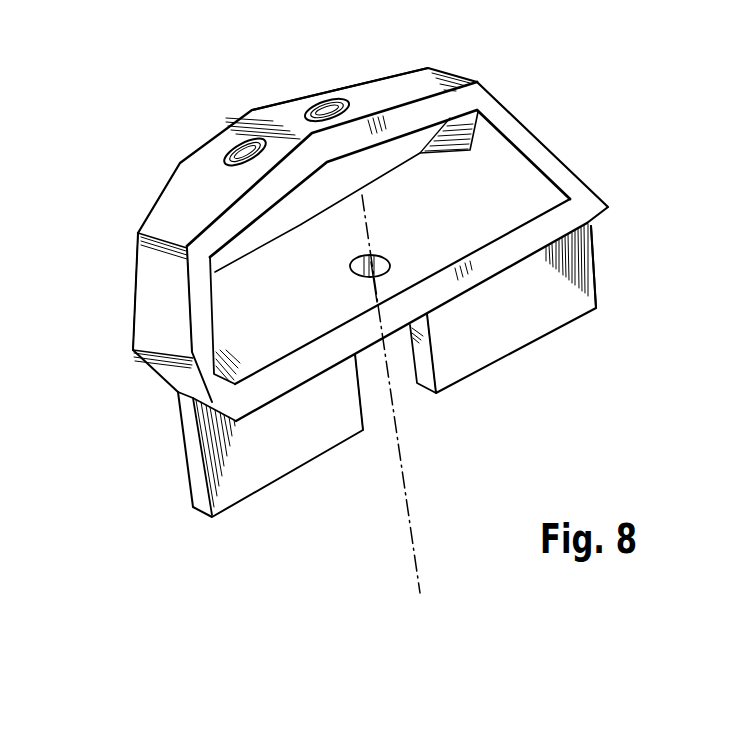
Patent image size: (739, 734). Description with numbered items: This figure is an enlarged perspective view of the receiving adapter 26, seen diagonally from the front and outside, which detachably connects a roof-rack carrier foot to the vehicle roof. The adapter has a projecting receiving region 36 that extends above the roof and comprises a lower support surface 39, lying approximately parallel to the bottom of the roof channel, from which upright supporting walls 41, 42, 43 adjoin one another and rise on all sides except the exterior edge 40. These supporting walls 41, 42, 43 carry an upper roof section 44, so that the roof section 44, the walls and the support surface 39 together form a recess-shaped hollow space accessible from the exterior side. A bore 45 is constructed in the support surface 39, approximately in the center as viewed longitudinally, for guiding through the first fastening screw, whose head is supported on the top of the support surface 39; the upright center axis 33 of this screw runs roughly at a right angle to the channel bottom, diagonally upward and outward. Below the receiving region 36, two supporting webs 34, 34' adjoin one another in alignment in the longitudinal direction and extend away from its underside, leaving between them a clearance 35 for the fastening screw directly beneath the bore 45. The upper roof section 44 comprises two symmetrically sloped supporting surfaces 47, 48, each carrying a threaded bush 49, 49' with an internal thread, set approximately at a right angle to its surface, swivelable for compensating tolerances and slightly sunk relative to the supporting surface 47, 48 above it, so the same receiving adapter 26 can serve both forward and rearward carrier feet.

The receiving adapter 26 is at (573, 152).
The upright center axis 33 is at (408, 505).
The supporting web 34 is at (270, 451).
The supporting web 34' is at (503, 326).
The clearance 35 is at (386, 370).
The projecting receiving region 36 is at (133, 295).
The lower support surface 39 is at (472, 230).
The exterior edge 40 is at (558, 226).
The supporting wall 41 is at (293, 203).
The supporting wall 42 is at (148, 277).
The supporting wall 43 is at (510, 123).
The upper roof section 44 is at (369, 76).
The bore 45 is at (352, 272).
The supporting surface 47 is at (170, 190).
The supporting surface 48 is at (413, 70).
The threaded bush 49 is at (238, 102).
The threaded bush 49' is at (326, 64).